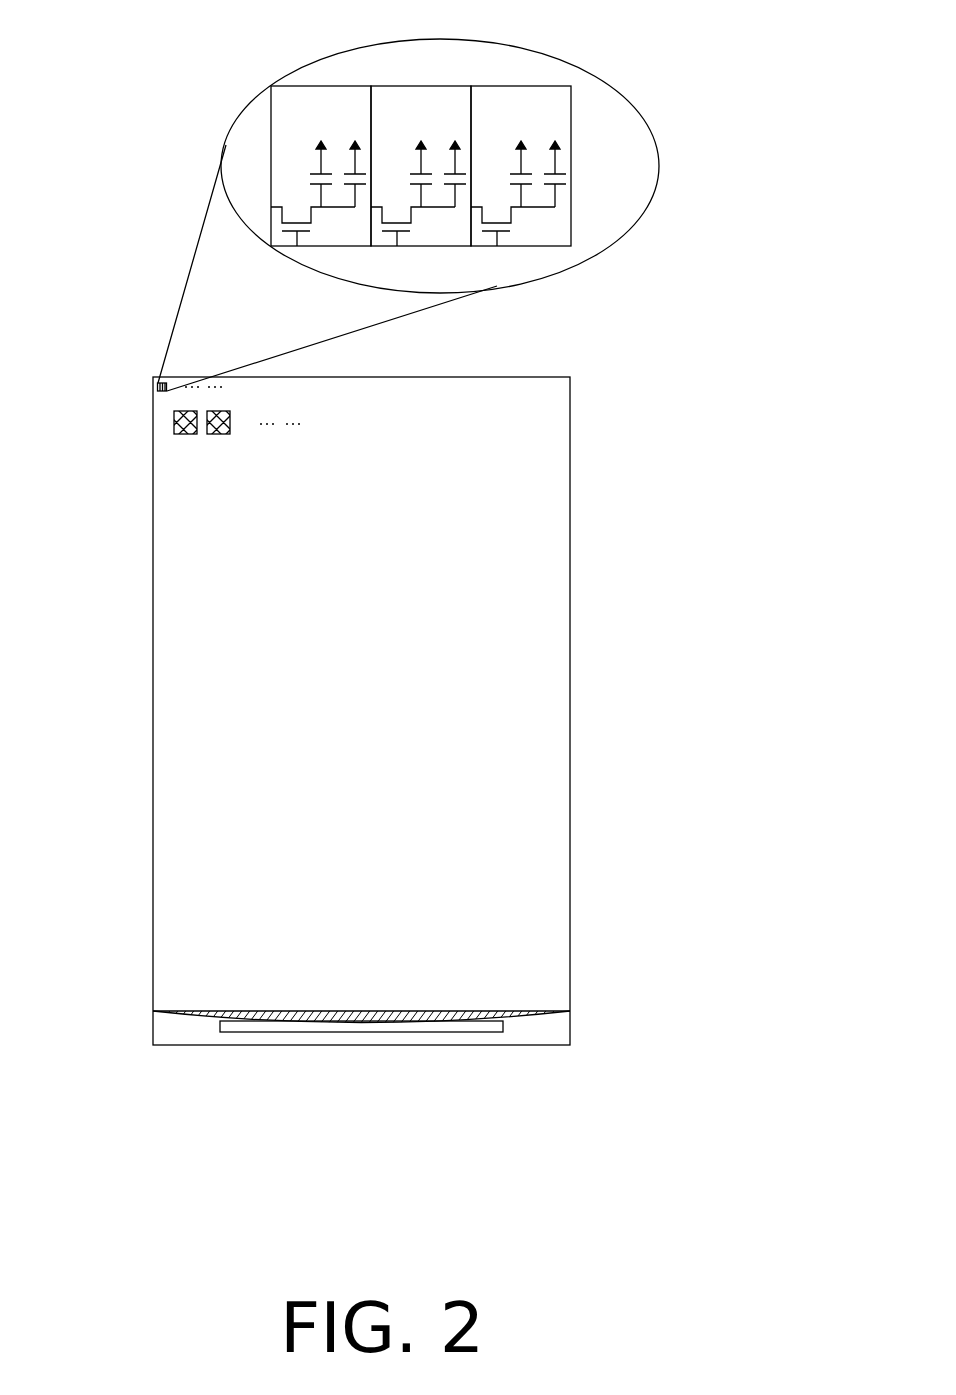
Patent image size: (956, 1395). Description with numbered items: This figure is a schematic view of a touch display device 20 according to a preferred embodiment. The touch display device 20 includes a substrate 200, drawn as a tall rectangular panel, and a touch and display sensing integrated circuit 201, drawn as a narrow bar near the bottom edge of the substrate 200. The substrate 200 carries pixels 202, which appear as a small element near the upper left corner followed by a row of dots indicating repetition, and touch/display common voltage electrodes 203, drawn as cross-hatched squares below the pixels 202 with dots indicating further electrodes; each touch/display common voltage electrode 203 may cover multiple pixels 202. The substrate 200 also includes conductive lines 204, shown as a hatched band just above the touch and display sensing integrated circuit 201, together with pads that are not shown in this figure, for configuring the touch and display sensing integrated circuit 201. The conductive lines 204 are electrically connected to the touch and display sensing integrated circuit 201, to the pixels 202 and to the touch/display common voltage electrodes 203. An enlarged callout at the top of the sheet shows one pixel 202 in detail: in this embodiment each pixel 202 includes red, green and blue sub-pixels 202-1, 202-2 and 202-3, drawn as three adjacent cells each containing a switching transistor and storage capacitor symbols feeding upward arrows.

The touch display device 20 is at (120, 323).
The substrate 200 is at (547, 937).
The touch and display sensing integrated circuit 201 is at (385, 1032).
The pixel 202 is at (158, 385).
The red sub-pixel 202-1 is at (315, 98).
The green sub-pixel 202-2 is at (412, 88).
The blue sub-pixel 202-3 is at (523, 95).
The touch/display common voltage electrode 203 is at (187, 424).
The conductive line 204 is at (472, 1018).